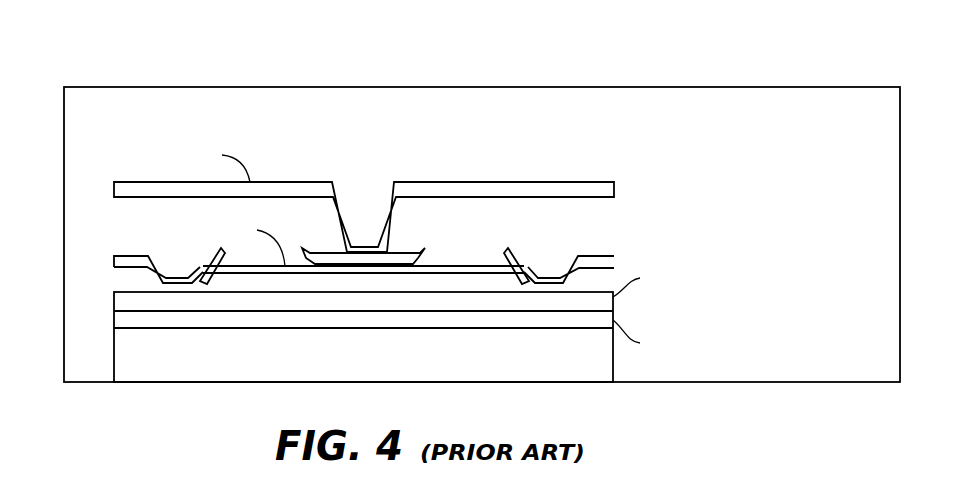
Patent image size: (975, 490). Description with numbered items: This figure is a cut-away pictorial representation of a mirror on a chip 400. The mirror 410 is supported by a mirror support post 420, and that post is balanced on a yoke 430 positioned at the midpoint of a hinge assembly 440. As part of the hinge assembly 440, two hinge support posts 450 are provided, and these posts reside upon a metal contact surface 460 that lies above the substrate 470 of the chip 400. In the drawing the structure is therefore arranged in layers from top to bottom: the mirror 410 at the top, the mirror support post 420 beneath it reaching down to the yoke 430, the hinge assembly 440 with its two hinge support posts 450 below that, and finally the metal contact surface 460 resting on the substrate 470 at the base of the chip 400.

The chip 400 is at (781, 66).
The mirror 410 is at (141, 87).
The mirror support post 420 is at (345, 213).
The yoke 430 is at (395, 252).
The hinge assembly 440 is at (114, 262).
The hinge support posts 450 is at (542, 283).
The metal contact surface 460 is at (222, 292).
The substrate 470 is at (138, 367).